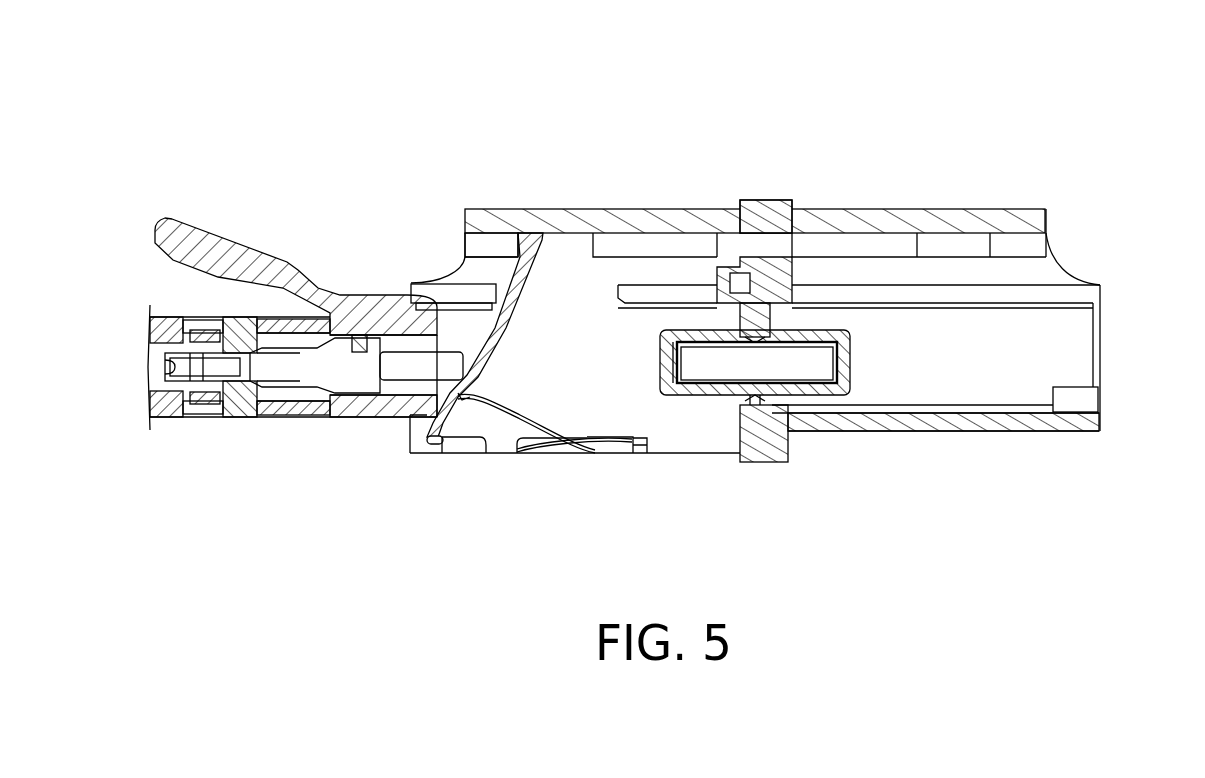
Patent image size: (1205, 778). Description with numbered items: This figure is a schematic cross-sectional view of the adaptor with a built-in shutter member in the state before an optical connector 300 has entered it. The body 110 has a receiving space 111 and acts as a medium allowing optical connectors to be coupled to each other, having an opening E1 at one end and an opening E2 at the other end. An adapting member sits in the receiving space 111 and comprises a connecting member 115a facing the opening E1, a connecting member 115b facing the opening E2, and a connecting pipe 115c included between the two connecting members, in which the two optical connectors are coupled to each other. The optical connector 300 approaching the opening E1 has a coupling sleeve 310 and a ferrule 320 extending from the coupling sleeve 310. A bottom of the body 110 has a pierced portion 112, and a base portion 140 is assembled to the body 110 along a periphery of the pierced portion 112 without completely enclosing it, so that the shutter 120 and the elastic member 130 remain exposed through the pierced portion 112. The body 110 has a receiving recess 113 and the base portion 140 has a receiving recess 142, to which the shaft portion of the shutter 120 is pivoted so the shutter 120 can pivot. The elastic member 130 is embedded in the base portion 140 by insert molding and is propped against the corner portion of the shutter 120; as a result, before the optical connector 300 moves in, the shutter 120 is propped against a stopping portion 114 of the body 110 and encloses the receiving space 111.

The body 110 is at (575, 208).
The receiving space 111 is at (599, 355).
The pierced portion 112 is at (573, 466).
The receiving recess 113 is at (414, 429).
The stopping portion 114 is at (488, 240).
The connecting member 115a is at (697, 395).
The connecting member 115b is at (830, 380).
The connecting pipe 115c is at (802, 383).
The shutter 120 is at (532, 272).
The elastic member 130 is at (515, 403).
The base portion 140 is at (647, 453).
The receiving recess 142 is at (439, 459).
The optical connector 300 is at (1108, 32).
The coupling sleeve 310 is at (208, 233).
The ferrule 320 is at (393, 367).
The opening E1 is at (400, 316).
The opening E2 is at (1114, 335).